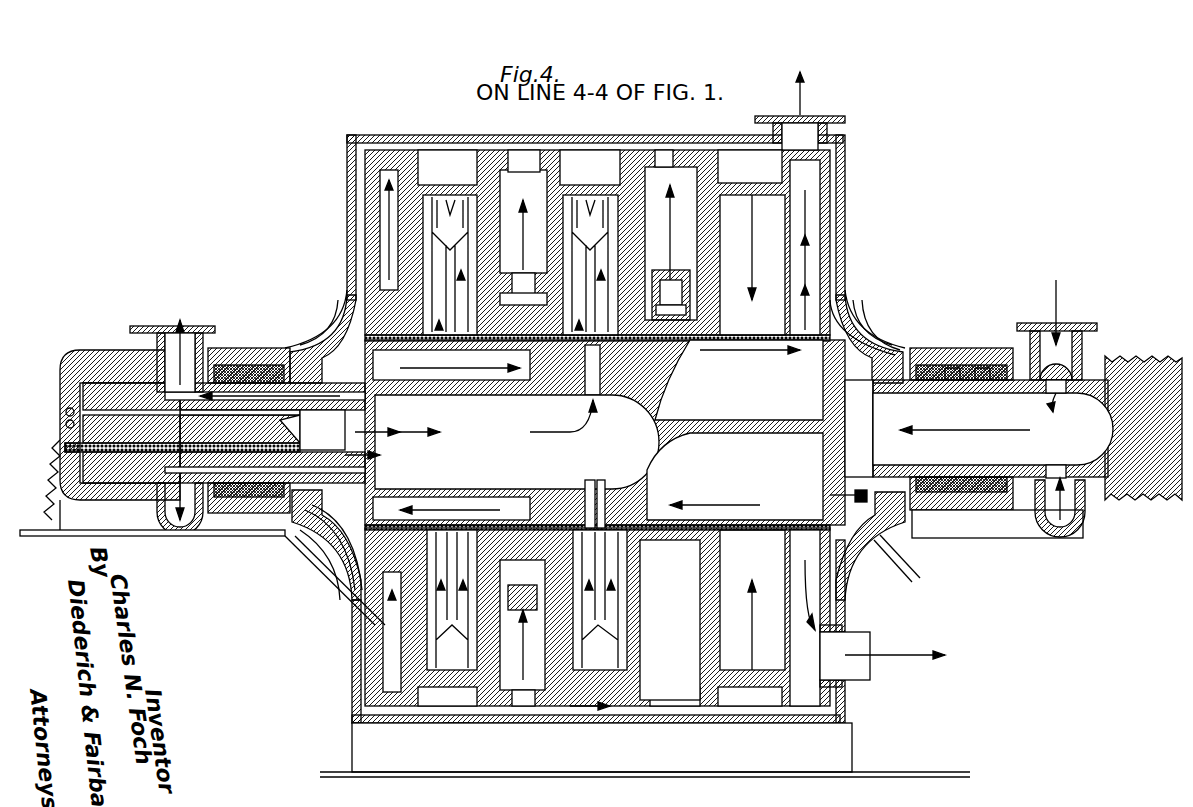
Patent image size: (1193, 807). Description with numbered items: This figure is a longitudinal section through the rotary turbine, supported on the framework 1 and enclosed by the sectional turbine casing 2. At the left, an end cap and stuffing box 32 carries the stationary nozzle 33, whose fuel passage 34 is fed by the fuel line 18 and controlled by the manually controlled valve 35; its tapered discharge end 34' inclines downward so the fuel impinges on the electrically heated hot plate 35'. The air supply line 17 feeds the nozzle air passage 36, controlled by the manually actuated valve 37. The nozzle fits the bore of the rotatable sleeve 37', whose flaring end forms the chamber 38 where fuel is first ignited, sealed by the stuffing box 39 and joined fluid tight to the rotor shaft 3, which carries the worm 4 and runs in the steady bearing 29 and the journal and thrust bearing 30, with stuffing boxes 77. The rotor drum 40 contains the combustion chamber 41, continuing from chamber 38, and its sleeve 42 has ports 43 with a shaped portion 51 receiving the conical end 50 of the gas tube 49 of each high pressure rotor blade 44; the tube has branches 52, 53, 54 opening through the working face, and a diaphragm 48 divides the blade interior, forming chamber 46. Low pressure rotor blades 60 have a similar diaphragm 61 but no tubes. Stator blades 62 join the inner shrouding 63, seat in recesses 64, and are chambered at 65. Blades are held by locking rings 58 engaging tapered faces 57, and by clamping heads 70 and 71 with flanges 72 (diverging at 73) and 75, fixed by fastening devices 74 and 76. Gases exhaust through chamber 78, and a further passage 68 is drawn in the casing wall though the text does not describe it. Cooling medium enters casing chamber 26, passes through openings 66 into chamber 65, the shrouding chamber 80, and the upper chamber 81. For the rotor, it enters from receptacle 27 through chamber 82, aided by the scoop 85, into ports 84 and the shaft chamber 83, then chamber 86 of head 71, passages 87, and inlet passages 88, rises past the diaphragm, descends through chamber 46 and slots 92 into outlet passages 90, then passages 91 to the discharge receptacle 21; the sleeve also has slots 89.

The supporting framework 1 is at (848, 752).
The turbine casing 2 is at (430, 136).
The rotor shaft 3 is at (1140, 470).
The worm 4 is at (1140, 360).
The air supply line 17 is at (72, 378).
The fuel line 18 is at (72, 440).
The discharge receptacle 21 is at (180, 525).
The cooling medium chamber 26 is at (575, 706).
The admission receptacle 27 is at (1082, 525).
The steady bearing 29 is at (250, 348).
The journal and thrust bearing 30 is at (968, 348).
The end cap and stuffing box 32 is at (75, 362).
The nozzle 33 is at (110, 537).
The fuel passage 34 is at (43, 486).
The tapered discharge end 34' is at (315, 429).
The manually controlled valve 35 is at (44, 418).
The electrically heated hot plate 35' is at (391, 460).
The nozzle air passage 36 is at (150, 345).
The manually actuated valve 37 is at (46, 393).
The rotatable sleeve 37' is at (392, 414).
The chamber 38 is at (327, 439).
The stuffing box 39 is at (120, 383).
The rotor drum 40 is at (670, 403).
The combustion chamber 41 is at (517, 442).
The outer shell or sleeve 42 is at (805, 510).
The ports 43 is at (610, 381).
The high pressure rotor blades 44 is at (437, 190).
The chamber 46 is at (432, 165).
The baffle or diaphragm 48 is at (527, 265).
The gas tube 49 is at (502, 433).
The conical lower end 50 is at (660, 355).
The correspondingly shaped portion 51 is at (658, 372).
The branch 52 is at (648, 222).
The side branch 53 is at (523, 211).
The side branch 54 is at (648, 236).
The tapered faces 57 is at (552, 406).
The locking rings 58 is at (730, 345).
The low pressure rotor blades 60 is at (790, 290).
The diaphragm 61 is at (762, 245).
The stator blades 62 is at (548, 180).
The inner shrouding 63 is at (540, 300).
The recesses 64 is at (487, 195).
The chamber 65 is at (683, 215).
The openings 66 is at (520, 700).
The passage 68 is at (832, 185).
The clamping head 70 is at (305, 560).
The clamping head 71 is at (890, 332).
The annular flange 72 is at (342, 300).
The outwardly diverging portion 73 is at (350, 590).
The fastening devices 74 is at (335, 318).
The flange 75 is at (900, 295).
The fastening devices 76 is at (895, 560).
The stuffing boxes 77 is at (935, 500).
The exhaust chamber 78 is at (867, 618).
The shrouding chamber 80 is at (486, 416).
The upper casing chamber 81 is at (738, 160).
The chamber 82 is at (1058, 525).
The shaft chamber 83 is at (965, 442).
The ports 84 is at (1056, 465).
The scoop 85 is at (1070, 360).
The chamber 86 is at (862, 428).
The passages 87 is at (870, 318).
The inlet passages 88 is at (739, 380).
The slots 89 is at (455, 360).
The outlet passages 90 is at (735, 476).
The passages 91 is at (335, 570).
The ports or slots 92 is at (478, 528).